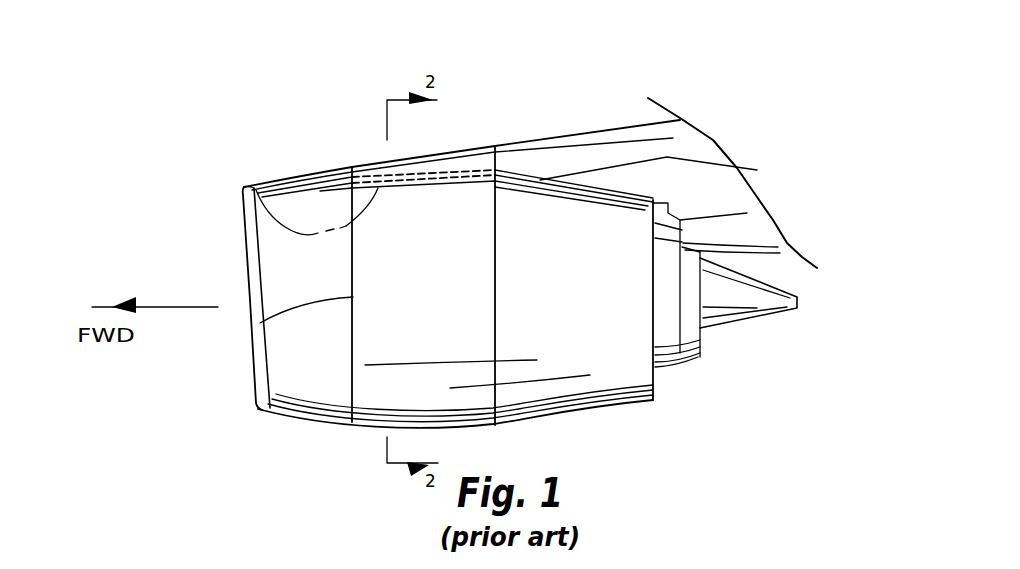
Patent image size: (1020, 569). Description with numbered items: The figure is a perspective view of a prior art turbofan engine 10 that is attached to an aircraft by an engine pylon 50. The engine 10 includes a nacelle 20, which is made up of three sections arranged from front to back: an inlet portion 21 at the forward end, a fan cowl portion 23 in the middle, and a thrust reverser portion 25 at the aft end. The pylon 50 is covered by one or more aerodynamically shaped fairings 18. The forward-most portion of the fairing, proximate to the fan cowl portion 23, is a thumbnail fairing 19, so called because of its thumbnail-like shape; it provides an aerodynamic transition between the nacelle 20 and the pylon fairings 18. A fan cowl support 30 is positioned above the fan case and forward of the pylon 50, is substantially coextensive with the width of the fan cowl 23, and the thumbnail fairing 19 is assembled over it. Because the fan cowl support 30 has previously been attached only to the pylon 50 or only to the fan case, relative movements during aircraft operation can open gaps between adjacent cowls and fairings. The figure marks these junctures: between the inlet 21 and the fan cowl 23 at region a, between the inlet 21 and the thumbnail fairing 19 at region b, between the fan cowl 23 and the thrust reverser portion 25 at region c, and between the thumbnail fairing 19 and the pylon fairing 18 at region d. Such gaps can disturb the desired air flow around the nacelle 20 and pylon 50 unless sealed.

The turbofan engine 10 is at (265, 58).
The fairings 18 is at (564, 148).
The thumbnail fairing 19 is at (378, 162).
The nacelle 20 is at (245, 257).
The inlet portion 21 is at (285, 357).
The fan cowl portion 23 is at (430, 305).
The thrust reverser portion 25 is at (612, 375).
The fan cowl support 30 is at (257, 187).
The engine pylon 50 is at (738, 190).
The region a is at (260, 323).
The region b is at (352, 168).
The region c is at (495, 278).
The region d is at (516, 145).